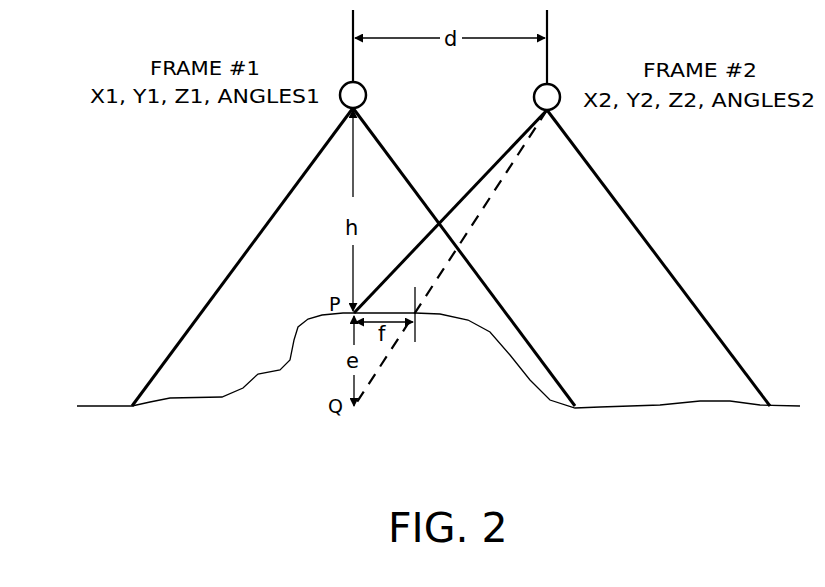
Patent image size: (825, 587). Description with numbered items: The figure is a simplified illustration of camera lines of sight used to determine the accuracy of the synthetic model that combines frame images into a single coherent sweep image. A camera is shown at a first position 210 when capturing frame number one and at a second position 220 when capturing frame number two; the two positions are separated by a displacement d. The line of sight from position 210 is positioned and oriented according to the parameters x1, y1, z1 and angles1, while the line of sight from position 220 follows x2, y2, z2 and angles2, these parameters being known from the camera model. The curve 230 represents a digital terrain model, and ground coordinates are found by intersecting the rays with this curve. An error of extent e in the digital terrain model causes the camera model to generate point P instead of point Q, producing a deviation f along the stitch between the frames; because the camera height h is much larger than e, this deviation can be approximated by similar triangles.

The first camera position 210 is at (350, 83).
The second camera position 220 is at (552, 85).
The digital terrain model curve 230 is at (92, 407).